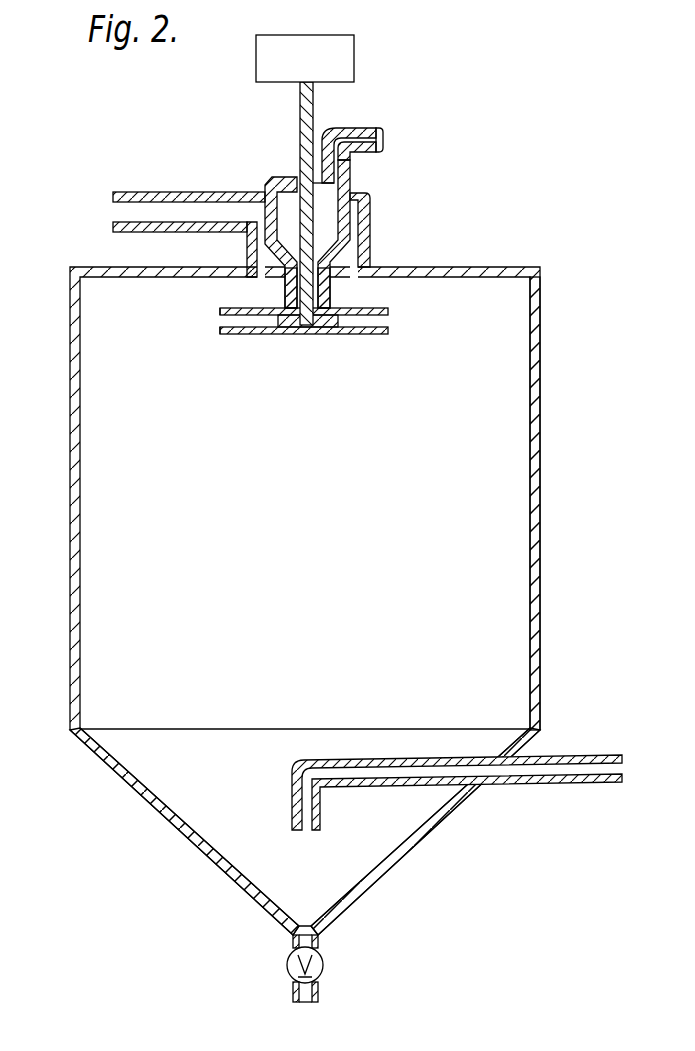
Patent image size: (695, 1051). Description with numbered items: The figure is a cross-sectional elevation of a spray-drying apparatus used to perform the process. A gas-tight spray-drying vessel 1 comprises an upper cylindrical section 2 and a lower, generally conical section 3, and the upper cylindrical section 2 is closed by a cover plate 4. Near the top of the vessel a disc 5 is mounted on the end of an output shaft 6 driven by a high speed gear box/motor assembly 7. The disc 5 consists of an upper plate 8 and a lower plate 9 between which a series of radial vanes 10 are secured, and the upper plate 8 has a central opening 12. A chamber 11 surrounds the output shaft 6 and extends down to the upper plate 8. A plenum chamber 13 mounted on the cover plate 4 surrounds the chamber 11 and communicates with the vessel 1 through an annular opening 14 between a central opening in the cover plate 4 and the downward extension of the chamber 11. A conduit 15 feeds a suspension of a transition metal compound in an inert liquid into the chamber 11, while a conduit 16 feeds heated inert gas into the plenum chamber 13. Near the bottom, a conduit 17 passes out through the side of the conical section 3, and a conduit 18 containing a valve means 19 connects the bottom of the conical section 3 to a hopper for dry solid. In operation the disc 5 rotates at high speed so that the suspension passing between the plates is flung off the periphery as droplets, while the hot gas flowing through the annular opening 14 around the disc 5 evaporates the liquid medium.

The spray-drying vessel 1 is at (305, 571).
The upper cylindrical section 2 is at (540, 512).
The lower conical section 3 is at (142, 802).
The cover plate 4 is at (513, 265).
The disc 5 is at (293, 351).
The output shaft 6 is at (300, 117).
The gear box/motor assembly 7 is at (322, 75).
The upper plate 8 is at (240, 308).
The lower plate 9 is at (243, 334).
The radial vanes 10 is at (362, 326).
The chamber 11 is at (369, 198).
The central opening 12 is at (331, 288).
The plenum chamber 13 is at (246, 240).
The annular opening 14 is at (368, 242).
The conduit 15 is at (378, 128).
The conduit 16 is at (150, 162).
The conduit 17 is at (545, 788).
The conduit 18 is at (318, 948).
The valve means 19 is at (287, 963).